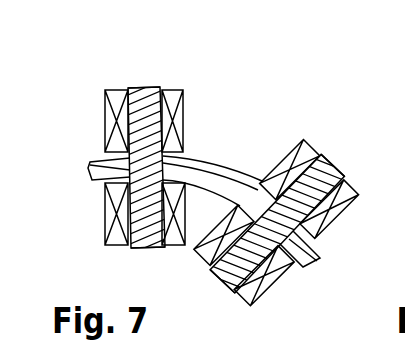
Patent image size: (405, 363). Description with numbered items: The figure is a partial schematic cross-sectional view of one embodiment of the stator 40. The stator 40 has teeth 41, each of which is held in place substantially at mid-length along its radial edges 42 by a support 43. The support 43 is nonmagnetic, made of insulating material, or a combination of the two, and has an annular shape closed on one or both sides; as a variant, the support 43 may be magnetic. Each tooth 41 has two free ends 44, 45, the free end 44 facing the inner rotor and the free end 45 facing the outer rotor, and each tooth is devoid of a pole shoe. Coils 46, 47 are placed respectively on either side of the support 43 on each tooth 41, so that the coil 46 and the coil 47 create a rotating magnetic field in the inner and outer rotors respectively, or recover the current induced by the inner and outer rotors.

The stator 40 is at (74, 147).
The teeth 41 is at (155, 88).
The radial edges 42 is at (115, 107).
The support 43 is at (222, 181).
The free end 44 is at (150, 248).
The free end 45 is at (140, 90).
The coil 46 is at (110, 213).
The coil 47 is at (183, 96).